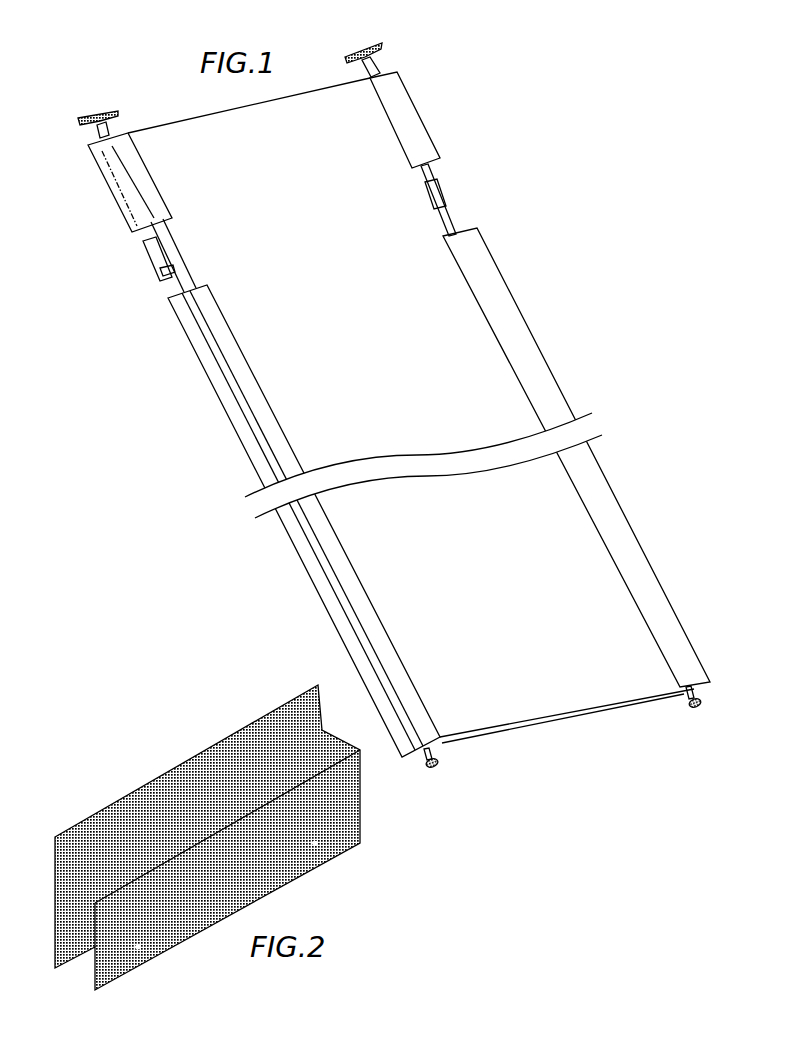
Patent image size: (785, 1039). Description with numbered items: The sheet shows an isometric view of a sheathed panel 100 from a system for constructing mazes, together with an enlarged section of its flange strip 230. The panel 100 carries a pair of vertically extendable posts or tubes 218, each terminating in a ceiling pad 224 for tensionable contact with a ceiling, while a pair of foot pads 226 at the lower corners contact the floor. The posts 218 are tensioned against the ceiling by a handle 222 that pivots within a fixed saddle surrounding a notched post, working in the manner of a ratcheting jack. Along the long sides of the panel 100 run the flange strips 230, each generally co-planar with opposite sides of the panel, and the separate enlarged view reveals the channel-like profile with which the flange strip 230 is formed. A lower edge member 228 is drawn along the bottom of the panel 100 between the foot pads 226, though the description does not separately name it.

In FIG. 1, the panel 100 is at (578, 137).
In FIG. 1, the vertically extendable post 218 is at (432, 173).
In FIG. 1, the handle 222 is at (157, 267).
In FIG. 1, the ceiling pad 224 is at (97, 113).
In FIG. 1, the foot pad 226 is at (433, 768).
In FIG. 1, the bottom rail 228 is at (540, 685).
In FIG. 1, the flange strip 230 is at (300, 548).
In FIG. 2, the flange strip 230 is at (143, 787).